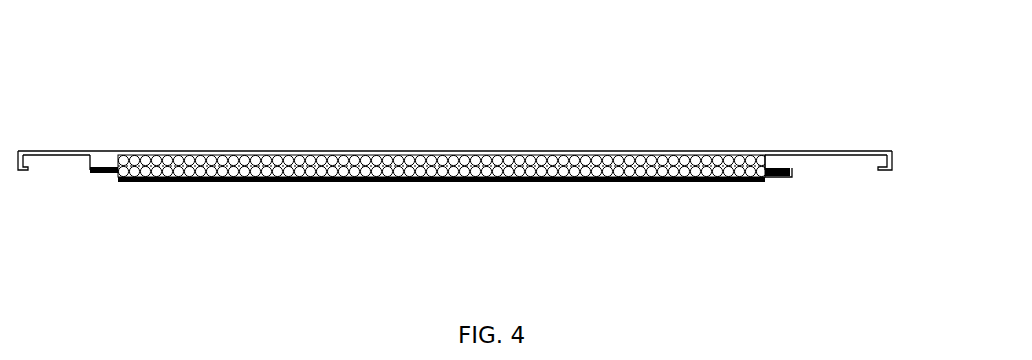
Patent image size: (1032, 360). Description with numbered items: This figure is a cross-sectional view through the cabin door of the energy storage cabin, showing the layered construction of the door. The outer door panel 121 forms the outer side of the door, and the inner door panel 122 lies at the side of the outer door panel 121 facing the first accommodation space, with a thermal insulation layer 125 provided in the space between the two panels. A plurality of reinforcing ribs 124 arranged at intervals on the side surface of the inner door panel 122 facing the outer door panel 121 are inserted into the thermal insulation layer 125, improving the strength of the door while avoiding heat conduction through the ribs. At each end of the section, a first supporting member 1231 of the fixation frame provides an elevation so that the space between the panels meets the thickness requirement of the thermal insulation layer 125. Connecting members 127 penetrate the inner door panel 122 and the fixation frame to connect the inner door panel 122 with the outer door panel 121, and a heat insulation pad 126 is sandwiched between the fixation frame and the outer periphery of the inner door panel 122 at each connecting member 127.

The outer door panel 121 is at (826, 152).
The first supporting member 1231 is at (92, 160).
The reinforcing rib 124 is at (551, 162).
The thermal insulation layer 125 is at (640, 162).
The inner door panel 122 is at (633, 183).
The connecting member 127 is at (104, 168).
The heat insulation pad 126 is at (800, 177).